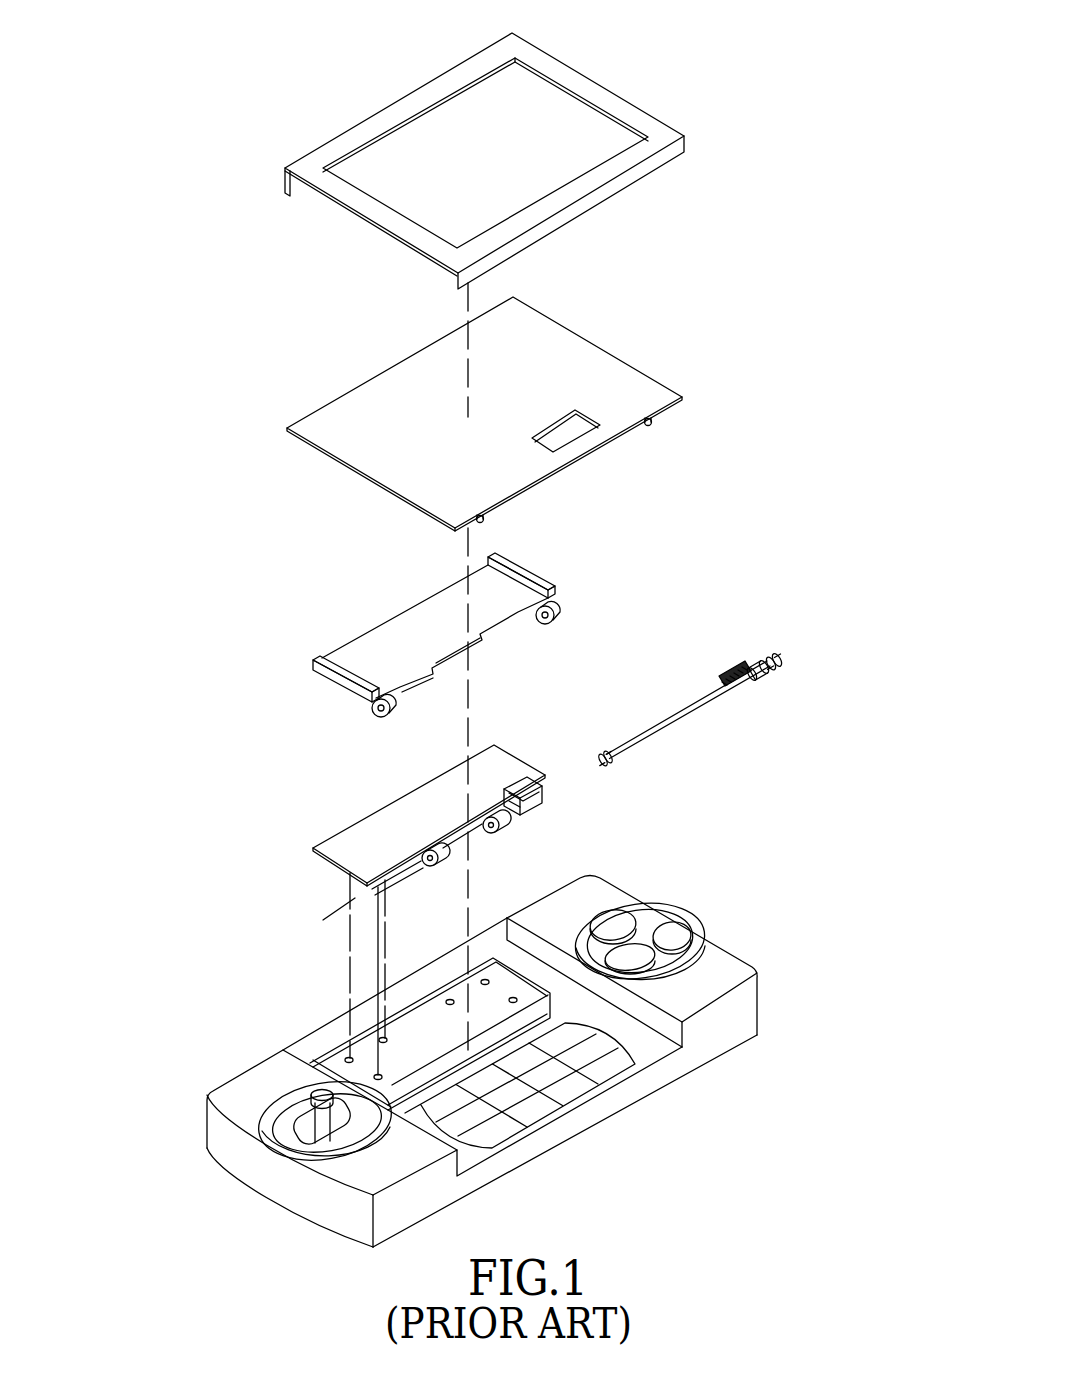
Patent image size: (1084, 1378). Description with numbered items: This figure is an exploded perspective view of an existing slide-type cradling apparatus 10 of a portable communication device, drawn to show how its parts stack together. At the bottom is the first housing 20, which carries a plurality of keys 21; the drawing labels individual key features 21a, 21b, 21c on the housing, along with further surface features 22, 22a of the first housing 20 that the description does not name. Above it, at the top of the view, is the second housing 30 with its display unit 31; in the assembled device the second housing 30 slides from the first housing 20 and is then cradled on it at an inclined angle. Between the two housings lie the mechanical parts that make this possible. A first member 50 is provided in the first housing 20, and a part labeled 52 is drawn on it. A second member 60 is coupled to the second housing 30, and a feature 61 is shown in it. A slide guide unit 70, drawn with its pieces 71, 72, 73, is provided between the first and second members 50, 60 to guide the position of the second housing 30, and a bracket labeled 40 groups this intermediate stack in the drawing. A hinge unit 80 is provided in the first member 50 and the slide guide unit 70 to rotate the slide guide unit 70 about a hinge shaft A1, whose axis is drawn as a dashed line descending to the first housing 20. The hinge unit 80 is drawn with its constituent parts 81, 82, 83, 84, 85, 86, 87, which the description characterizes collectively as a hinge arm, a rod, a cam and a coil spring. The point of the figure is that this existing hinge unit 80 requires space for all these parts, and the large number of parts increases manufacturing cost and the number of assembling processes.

The slide-type cradling apparatus 10 is at (752, 58).
The first housing 20 is at (257, 1198).
The keys 21 is at (690, 1153).
The keypad 21a is at (535, 1112).
The joystick 21b is at (377, 1137).
The function buttons 21c is at (637, 892).
The recess 22 is at (312, 1065).
The holes 22a is at (381, 1038).
The second housing 30 is at (617, 97).
The display unit 31 is at (538, 88).
The display unit assembly 40 is at (182, 826).
The first member 50 is at (303, 838).
The connector 52 is at (537, 813).
The second member 60 is at (318, 448).
The opening 61 is at (560, 432).
The slide guide unit 70 is at (230, 568).
The connecting plate 71 is at (493, 568).
The upper bar 72 is at (488, 558).
The lower bar 73 is at (400, 707).
The hinge unit 80 is at (834, 524).
The hinge knuckle 81 is at (520, 787).
The hinge knuckle 82 is at (436, 848).
The hinge shaft 83 is at (667, 718).
The shaft head 84 is at (760, 677).
The collar 85 is at (752, 666).
The coil spring 86 is at (737, 697).
The washer 87 is at (607, 763).
The hinge shaft A1 is at (340, 908).